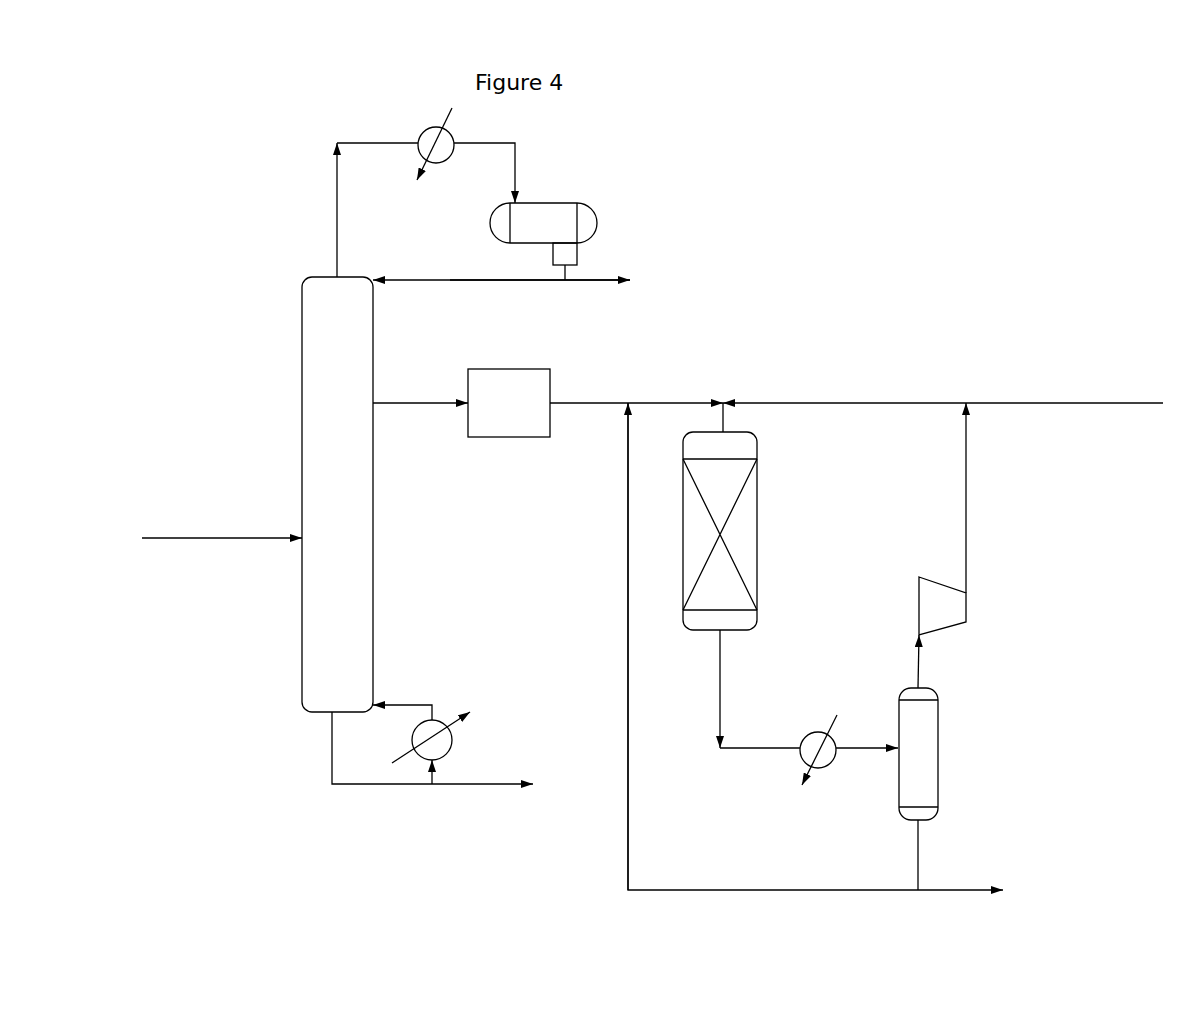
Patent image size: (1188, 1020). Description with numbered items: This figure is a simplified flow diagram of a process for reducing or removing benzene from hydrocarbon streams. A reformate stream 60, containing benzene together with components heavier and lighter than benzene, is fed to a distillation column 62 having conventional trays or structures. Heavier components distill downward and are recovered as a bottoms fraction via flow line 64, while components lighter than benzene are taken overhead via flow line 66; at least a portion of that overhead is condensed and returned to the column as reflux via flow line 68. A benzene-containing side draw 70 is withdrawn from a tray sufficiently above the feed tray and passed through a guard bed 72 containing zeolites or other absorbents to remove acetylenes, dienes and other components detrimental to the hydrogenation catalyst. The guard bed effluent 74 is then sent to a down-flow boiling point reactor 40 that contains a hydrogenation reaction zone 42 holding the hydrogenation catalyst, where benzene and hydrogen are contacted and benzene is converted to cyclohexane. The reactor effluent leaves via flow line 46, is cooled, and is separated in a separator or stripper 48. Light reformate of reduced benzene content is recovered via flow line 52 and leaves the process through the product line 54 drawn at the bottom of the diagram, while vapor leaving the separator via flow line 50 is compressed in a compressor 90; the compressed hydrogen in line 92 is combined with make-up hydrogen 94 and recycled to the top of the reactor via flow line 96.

The down-flow boiling point reactor 40 is at (683, 446).
The hydrogenation reaction zone 42 is at (698, 532).
The flow line 46 is at (712, 682).
The separator or stripper 48 is at (918, 754).
The flow line 50 is at (908, 664).
The flow line 52 is at (908, 848).
The product line 54 is at (856, 890).
The reformate stream 60 is at (166, 538).
The distillation column 62 is at (300, 282).
The flow line 64 is at (489, 784).
The flow line 66 is at (337, 232).
The flow line 68 is at (452, 280).
The side draw 70 is at (390, 404).
The guard bed 72 is at (509, 403).
The guard bed effluent 74 is at (563, 404).
The compressor 90 is at (942, 606).
The line 92 is at (968, 510).
The make-up hydrogen 94 is at (1081, 396).
The flow line 96 is at (874, 396).